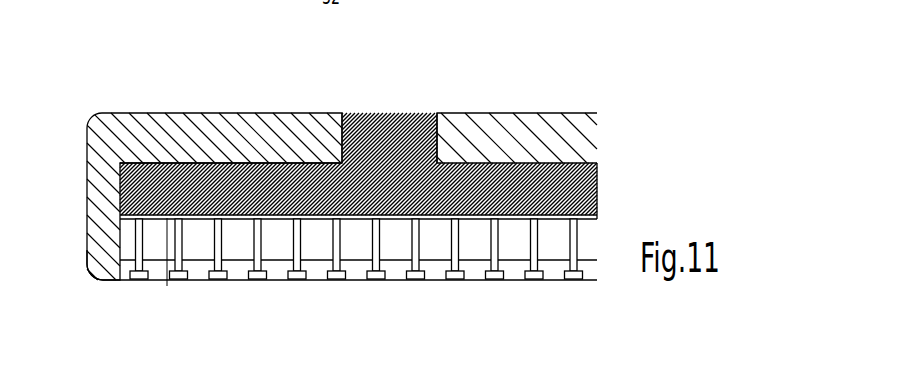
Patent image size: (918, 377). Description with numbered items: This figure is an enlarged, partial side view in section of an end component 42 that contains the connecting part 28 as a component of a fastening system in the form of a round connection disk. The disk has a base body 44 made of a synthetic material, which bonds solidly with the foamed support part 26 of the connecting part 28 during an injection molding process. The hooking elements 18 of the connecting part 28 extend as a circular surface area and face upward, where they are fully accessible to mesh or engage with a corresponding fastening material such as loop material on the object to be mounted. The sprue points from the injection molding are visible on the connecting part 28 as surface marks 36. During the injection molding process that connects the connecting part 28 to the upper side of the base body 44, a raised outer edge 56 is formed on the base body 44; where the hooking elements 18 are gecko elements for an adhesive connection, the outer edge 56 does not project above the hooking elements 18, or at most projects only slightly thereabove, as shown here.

The end component 42 is at (200, 78).
The base body 44 is at (567, 133).
The raised outer edge 56 is at (103, 259).
The surface marks 36 is at (430, 113).
The foamed support part 26 is at (504, 178).
The connecting part 28 is at (593, 185).
The hooking elements 18 is at (368, 283).